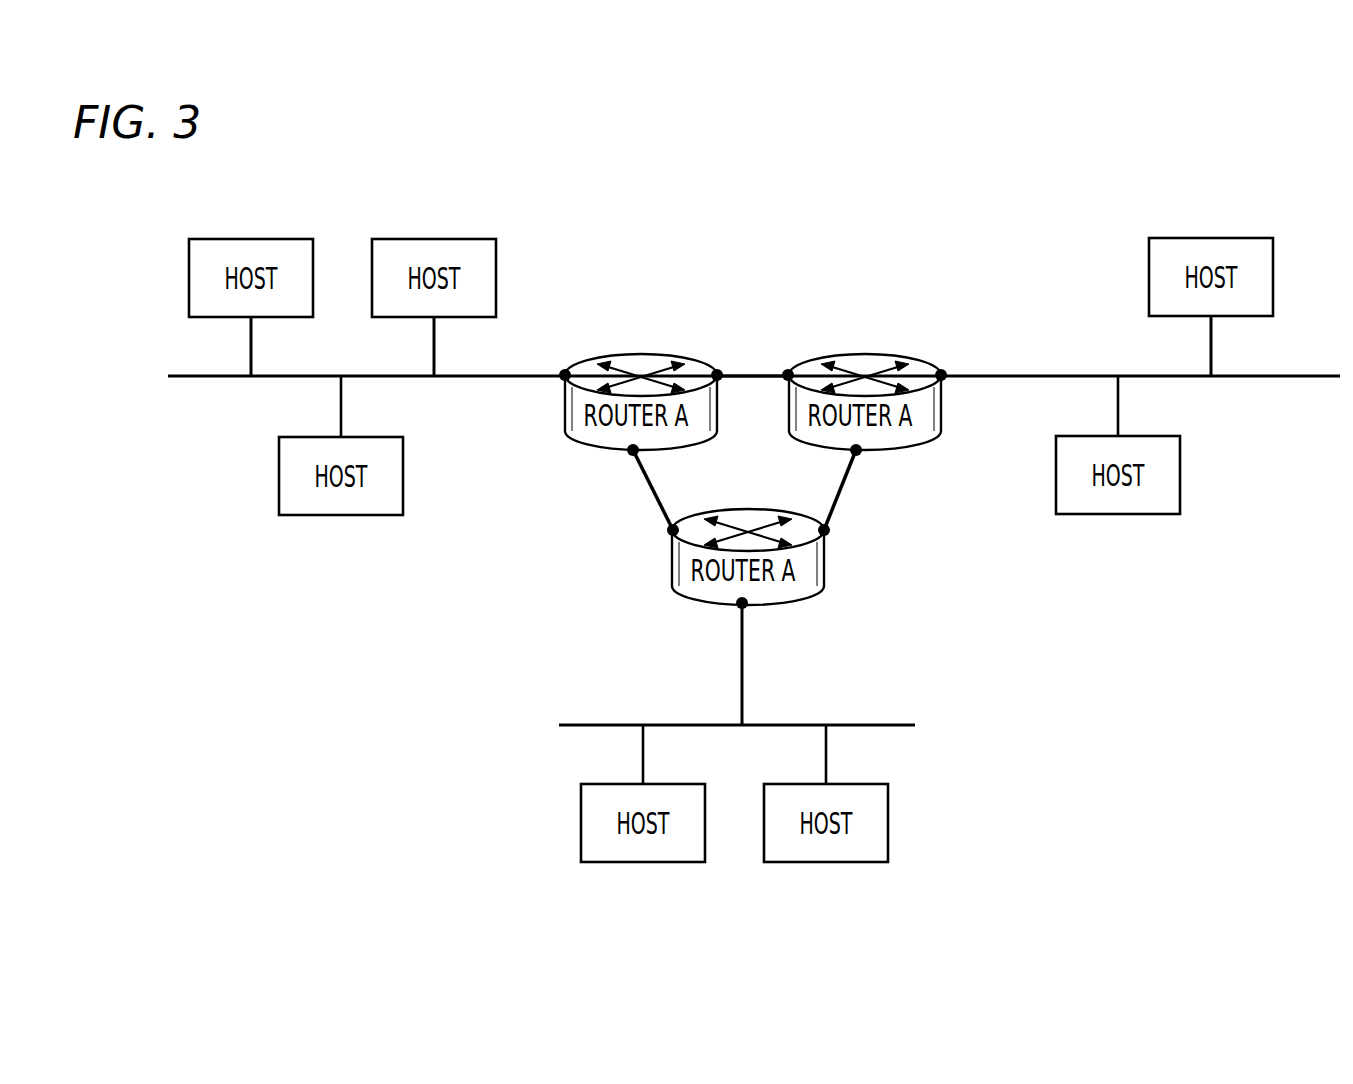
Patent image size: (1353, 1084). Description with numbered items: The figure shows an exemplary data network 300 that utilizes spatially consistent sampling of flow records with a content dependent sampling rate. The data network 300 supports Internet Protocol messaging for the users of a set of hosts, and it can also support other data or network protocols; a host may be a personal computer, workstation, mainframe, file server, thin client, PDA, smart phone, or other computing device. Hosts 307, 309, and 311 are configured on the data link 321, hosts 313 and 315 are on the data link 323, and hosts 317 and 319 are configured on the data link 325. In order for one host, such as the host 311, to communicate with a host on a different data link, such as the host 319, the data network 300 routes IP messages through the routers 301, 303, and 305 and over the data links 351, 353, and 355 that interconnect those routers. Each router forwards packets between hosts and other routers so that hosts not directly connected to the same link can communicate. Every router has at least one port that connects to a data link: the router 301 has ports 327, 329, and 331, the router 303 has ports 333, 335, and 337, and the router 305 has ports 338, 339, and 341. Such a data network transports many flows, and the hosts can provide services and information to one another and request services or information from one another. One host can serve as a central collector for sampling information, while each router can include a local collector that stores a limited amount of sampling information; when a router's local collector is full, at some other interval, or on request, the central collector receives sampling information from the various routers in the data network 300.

The data network 300 is at (846, 228).
The router 301 is at (645, 354).
The router 303 is at (868, 354).
The router 305 is at (749, 508).
The host 307 is at (249, 238).
The host 309 is at (432, 238).
The host 311 is at (340, 517).
The host 313 is at (640, 866).
The host 315 is at (830, 866).
The host 317 is at (1117, 516).
The host 319 is at (1211, 237).
The data link 321 is at (249, 380).
The data link 323 is at (872, 723).
The data link 325 is at (1108, 373).
The port 327 is at (565, 372).
The port 329 is at (630, 451).
The port 331 is at (717, 371).
The port 333 is at (788, 371).
The port 335 is at (859, 451).
The port 337 is at (942, 371).
The port 338 is at (671, 533).
The port 339 is at (739, 607).
The port 341 is at (826, 533).
The data link 351 is at (650, 490).
The data link 353 is at (757, 370).
The data link 355 is at (843, 495).